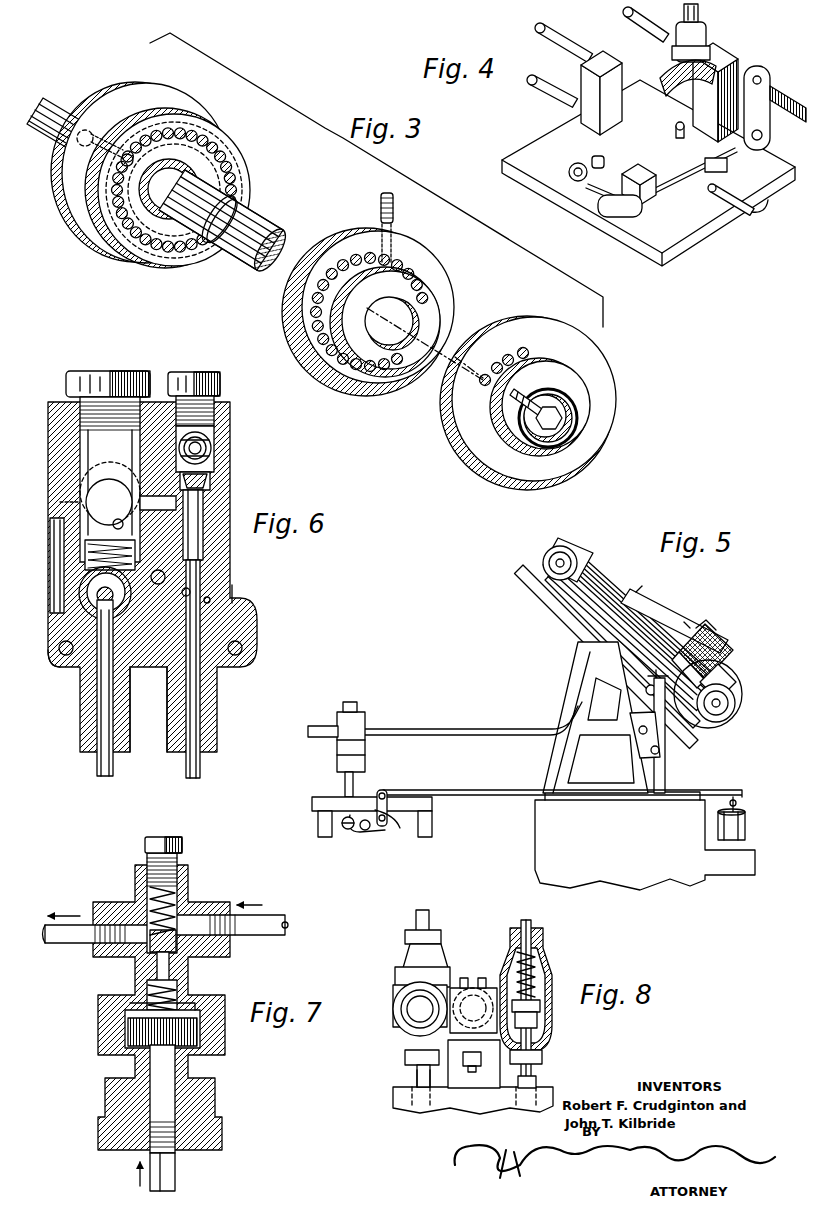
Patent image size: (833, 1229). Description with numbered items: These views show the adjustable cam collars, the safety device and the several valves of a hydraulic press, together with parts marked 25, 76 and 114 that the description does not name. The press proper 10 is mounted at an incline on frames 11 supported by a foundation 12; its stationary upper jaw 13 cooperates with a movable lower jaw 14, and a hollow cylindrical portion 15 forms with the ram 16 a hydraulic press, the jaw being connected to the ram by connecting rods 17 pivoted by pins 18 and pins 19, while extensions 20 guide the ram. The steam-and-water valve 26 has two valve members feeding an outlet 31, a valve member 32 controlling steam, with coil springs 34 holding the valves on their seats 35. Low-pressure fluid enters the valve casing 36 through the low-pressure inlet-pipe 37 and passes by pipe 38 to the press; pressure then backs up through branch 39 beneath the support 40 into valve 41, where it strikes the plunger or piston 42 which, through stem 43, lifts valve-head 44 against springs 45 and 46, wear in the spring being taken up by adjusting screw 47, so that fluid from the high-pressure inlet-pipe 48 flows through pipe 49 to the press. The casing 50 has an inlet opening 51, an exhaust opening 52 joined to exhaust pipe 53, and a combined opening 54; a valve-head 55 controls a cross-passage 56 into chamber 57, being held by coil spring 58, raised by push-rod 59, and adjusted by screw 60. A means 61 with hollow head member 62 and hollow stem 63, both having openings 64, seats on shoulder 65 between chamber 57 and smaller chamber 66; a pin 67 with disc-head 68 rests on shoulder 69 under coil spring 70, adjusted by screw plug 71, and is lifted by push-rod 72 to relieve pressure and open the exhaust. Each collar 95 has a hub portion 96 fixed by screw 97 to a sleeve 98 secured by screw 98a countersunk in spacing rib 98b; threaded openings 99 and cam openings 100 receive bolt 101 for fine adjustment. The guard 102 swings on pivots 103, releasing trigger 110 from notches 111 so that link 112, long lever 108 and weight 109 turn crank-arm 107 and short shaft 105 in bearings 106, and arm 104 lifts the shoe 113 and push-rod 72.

In FIG. 5, the press proper 10 is at (642, 588).
In FIG. 5, the frames 11 is at (590, 700).
In FIG. 5, the foundation 12 is at (645, 841).
In FIG. 5, the stationary upper head or jaw 13 is at (722, 642).
In FIG. 5, the lower jaw 14 is at (724, 676).
In FIG. 5, the hollow cylindrical portion 15 is at (660, 612).
In FIG. 5, the ram 16 is at (584, 570).
In FIG. 5, the connecting rods 17 is at (578, 606).
In FIG. 5, the pins 18 is at (735, 704).
In FIG. 5, the pins 19 is at (556, 560).
In FIG. 5, the extensions 20 is at (530, 574).
In FIG. 8, the valve 25 is at (415, 1010).
In FIG. 8, the valve 26 is at (452, 986).
In FIG. 8, the outlet 31 is at (472, 990).
In FIG. 8, the valve member 32 is at (540, 1024).
In FIG. 8, the coil springs 34 is at (547, 990).
In FIG. 8, the seats 35 is at (548, 1008).
In FIG. 4, the valve casing 36 is at (573, 73).
In FIG. 6, the valve casing 36 is at (236, 594).
In FIG. 5, the valve casing 36 is at (362, 725).
In FIG. 4, the low-pressure inlet-pipe 37 is at (568, 45).
In FIG. 5, the low-pressure inlet-pipe 37 is at (320, 728).
In FIG. 5, the pipe 38 is at (460, 729).
In FIG. 4, the branch 39 is at (684, 132).
In FIG. 7, the branch 39 is at (175, 1162).
In FIG. 4, the support 40 is at (664, 254).
In FIG. 4, the valve 41 is at (702, 46).
In FIG. 7, the valve 41 is at (203, 1086).
In FIG. 7, the plunger or piston 42 is at (128, 1022).
In FIG. 7, the stem 43 is at (178, 989).
In FIG. 7, the valve-head 44 is at (120, 945).
In FIG. 4, the spring 45 is at (722, 66).
In FIG. 7, the spring 45 is at (187, 895).
In FIG. 7, the spring 46 is at (176, 975).
In FIG. 4, the adjusting screw 47 is at (699, 8).
In FIG. 7, the adjusting screw 47 is at (178, 840).
In FIG. 4, the high-pressure inlet-pipe 48 is at (662, 32).
In FIG. 7, the high-pressure inlet-pipe 48 is at (282, 920).
In FIG. 7, the pipe 49 is at (46, 928).
In FIG. 6, the casing 50 is at (245, 623).
In FIG. 6, the inlet opening 51 is at (214, 455).
In FIG. 6, the outlet or exhaust opening 52 is at (104, 617).
In FIG. 4, the exhaust pipe 53 is at (548, 90).
In FIG. 6, the exhaust pipe 53 is at (90, 615).
In FIG. 6, the combined outlet and inlet opening 54 is at (112, 484).
In FIG. 6, the valve-head 55 is at (212, 486).
In FIG. 6, the cross-passage 56 is at (203, 542).
In FIG. 6, the chamber 57 is at (78, 468).
In FIG. 6, the coil spring 58 is at (212, 440).
In FIG. 6, the push-rod 59 is at (200, 683).
In FIG. 6, the adjusting screw 60 is at (188, 372).
In FIG. 6, the means 61 is at (92, 528).
In FIG. 6, the hollow head member 62 is at (88, 545).
In FIG. 6, the hollow stem 63 is at (82, 600).
In FIG. 6, the openings 64 is at (112, 563).
In FIG. 6, the shoulder 65 is at (210, 600).
In FIG. 6, the smaller chamber 66 is at (75, 660).
In FIG. 6, the pin 67 is at (132, 640).
In FIG. 6, the disc-head 68 is at (170, 578).
In FIG. 6, the shoulder 69 is at (195, 590).
In FIG. 6, the coil spring 70 is at (120, 514).
In FIG. 6, the screw plug 71 is at (109, 502).
In FIG. 4, the push-rod 72 is at (569, 176).
In FIG. 6, the push-rod 72 is at (106, 733).
In FIG. 5, the push-rod 72 is at (340, 790).
In FIG. 3, the shaft 76 is at (230, 240).
In FIG. 3, the collars 95 is at (222, 150).
In FIG. 3, the hub portion 96 is at (428, 312).
In FIG. 3, the screw 97 is at (381, 198).
In FIG. 3, the sleeve 98 is at (198, 200).
In FIG. 3, the screw 98a is at (165, 183).
In FIG. 3, the spacing rib 98b is at (196, 162).
In FIG. 3, the threaded openings 99 is at (205, 139).
In FIG. 3, the openings 100 is at (529, 354).
In FIG. 3, the bolt 101 is at (128, 153).
In FIG. 5, the guard 102 is at (702, 630).
In FIG. 5, the pivots 103 is at (655, 688).
In FIG. 4, the arm 104 is at (641, 212).
In FIG. 5, the arm 104 is at (362, 836).
In FIG. 4, the short shaft 105 is at (680, 180).
In FIG. 5, the short shaft 105 is at (385, 838).
In FIG. 4, the bearings 106 is at (724, 166).
In FIG. 5, the bearings 106 is at (372, 828).
In FIG. 4, the crank-arm 107 is at (769, 129).
In FIG. 5, the crank-arm 107 is at (388, 822).
In FIG. 4, the long lever 108 is at (784, 96).
In FIG. 5, the long lever 108 is at (500, 790).
In FIG. 5, the weight 109 is at (745, 828).
In FIG. 5, the pivoted trigger 110 is at (665, 740).
In FIG. 5, the notches 111 is at (685, 620).
In FIG. 5, the link 112 is at (666, 771).
In FIG. 4, the shoe 113 is at (595, 200).
In FIG. 5, the shoe 113 is at (345, 830).
In FIG. 8, the shoe 113 is at (536, 1082).
In FIG. 8, the valve stem 114 is at (418, 1082).